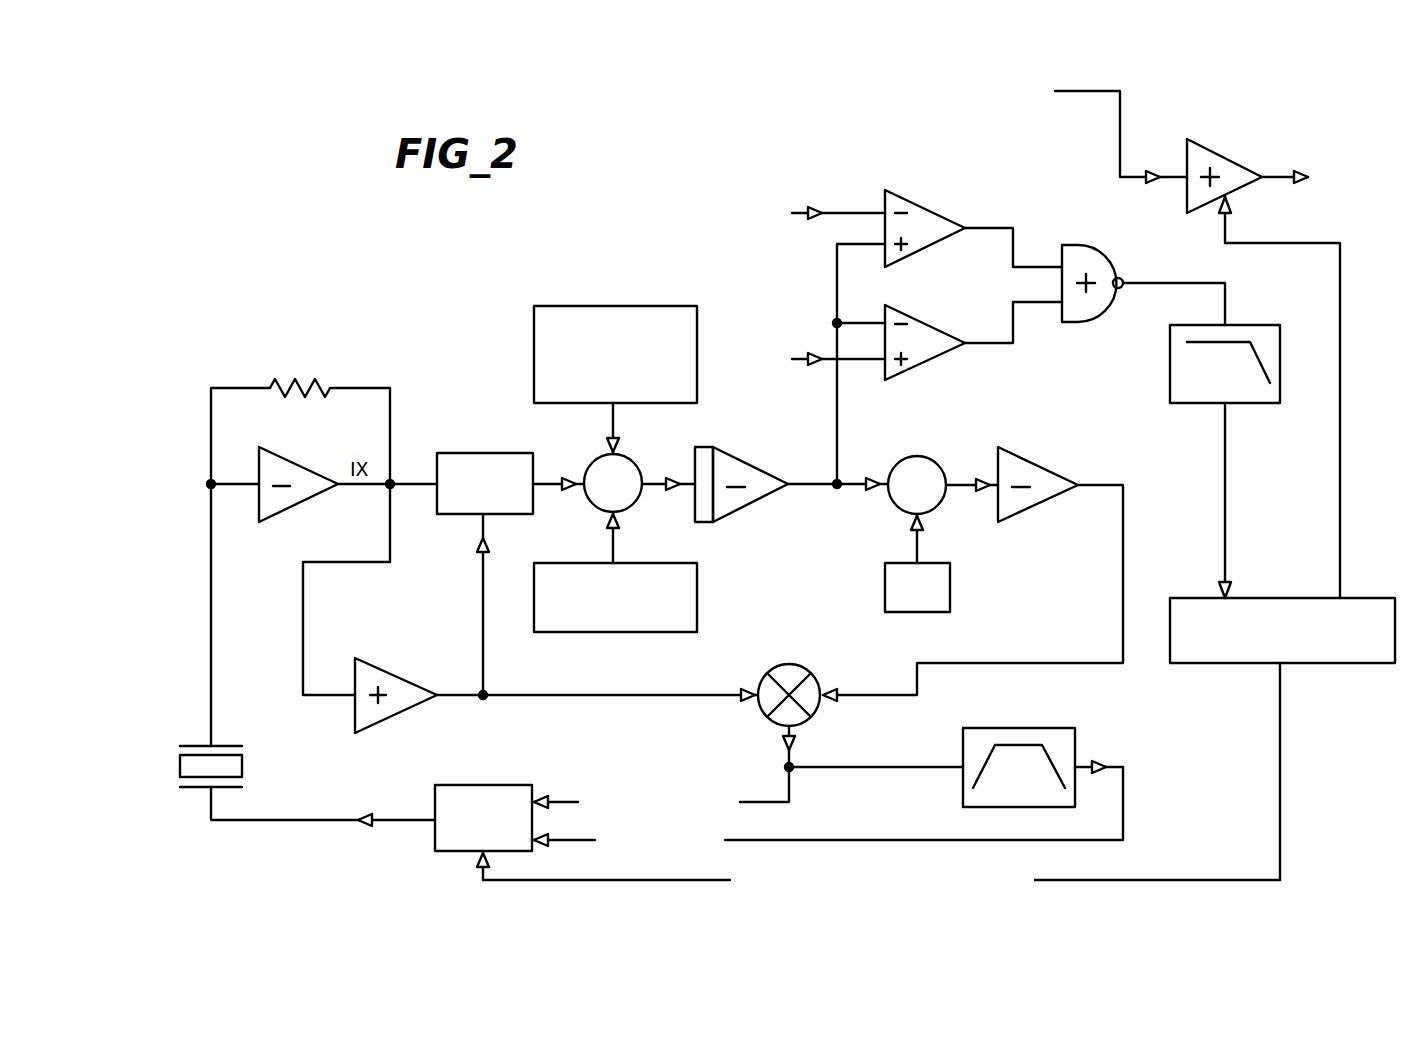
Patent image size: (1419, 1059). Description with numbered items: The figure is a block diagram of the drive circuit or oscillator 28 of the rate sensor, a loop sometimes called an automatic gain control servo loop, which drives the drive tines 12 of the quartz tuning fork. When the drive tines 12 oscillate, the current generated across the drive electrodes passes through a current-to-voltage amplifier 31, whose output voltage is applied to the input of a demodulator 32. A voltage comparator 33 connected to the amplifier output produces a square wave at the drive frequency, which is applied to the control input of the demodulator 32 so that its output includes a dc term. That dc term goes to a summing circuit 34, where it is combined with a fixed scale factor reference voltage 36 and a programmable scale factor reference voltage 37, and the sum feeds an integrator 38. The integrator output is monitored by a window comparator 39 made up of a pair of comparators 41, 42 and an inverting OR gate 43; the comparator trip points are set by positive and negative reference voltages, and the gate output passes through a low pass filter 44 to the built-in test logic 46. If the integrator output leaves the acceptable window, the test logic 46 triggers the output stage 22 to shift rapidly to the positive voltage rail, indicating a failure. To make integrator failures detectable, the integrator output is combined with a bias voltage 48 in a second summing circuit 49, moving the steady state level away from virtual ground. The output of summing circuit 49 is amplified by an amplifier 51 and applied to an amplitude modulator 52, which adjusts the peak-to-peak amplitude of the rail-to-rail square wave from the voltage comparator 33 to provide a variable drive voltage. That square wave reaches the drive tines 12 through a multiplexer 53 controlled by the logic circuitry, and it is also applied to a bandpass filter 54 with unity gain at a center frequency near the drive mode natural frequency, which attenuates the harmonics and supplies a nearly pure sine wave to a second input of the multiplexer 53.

The drive tines 12 is at (225, 746).
The output stage 22 is at (1187, 195).
The drive circuit or oscillator 28 is at (445, 378).
The current-to-voltage amplifier 31 is at (284, 518).
The demodulator 32 is at (483, 453).
The voltage comparator 33 is at (400, 715).
The summing circuit 34 is at (592, 462).
The fixed scale factor reference voltage 36 is at (618, 633).
The programmable scale factor reference voltage 37 is at (699, 329).
The integrator 38 is at (752, 508).
The window comparator 39 is at (858, 188).
The comparator 41 is at (922, 252).
The comparator 42 is at (922, 368).
The inverting OR gate 43 is at (1095, 330).
The low pass filter 44 is at (1247, 403).
The built-in test logic 46 is at (1312, 663).
The bias voltage 48 is at (950, 593).
The summing circuit 49 is at (892, 504).
The amplifier 51 is at (1035, 510).
The amplitude modulator 52 is at (765, 717).
The multiplexer 53 is at (520, 785).
The bandpass filter 54 is at (963, 745).